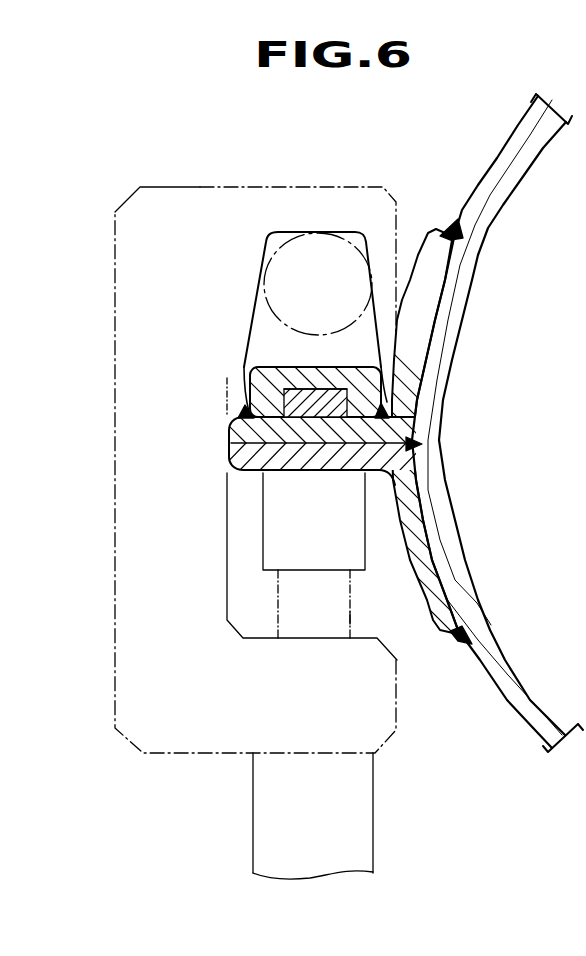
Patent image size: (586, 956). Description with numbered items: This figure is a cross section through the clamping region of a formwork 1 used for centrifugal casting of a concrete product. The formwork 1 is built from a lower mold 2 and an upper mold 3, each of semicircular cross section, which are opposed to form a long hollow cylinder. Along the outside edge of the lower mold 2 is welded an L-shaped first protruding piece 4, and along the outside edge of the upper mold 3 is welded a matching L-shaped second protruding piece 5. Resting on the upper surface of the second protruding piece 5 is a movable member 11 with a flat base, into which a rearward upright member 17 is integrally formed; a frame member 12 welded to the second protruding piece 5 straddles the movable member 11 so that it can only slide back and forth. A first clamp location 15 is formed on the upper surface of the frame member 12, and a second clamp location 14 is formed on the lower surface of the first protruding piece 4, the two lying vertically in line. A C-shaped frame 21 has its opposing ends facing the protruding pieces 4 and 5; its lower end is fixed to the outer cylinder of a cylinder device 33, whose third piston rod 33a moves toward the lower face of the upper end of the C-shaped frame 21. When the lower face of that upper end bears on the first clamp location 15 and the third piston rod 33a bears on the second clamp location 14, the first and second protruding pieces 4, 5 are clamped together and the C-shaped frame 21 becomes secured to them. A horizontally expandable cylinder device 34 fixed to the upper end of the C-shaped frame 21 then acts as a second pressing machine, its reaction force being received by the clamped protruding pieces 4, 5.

The formwork 1 is at (525, 190).
The lower mold 2 is at (448, 548).
The upper mold 3 is at (467, 244).
The first protruding piece 4 is at (225, 473).
The second protruding piece 5 is at (238, 427).
The movable member 11 is at (284, 400).
The frame member 12 is at (246, 381).
The second clamp location 14 is at (315, 475).
The first clamp location 15 is at (308, 366).
The rearward upright member 17 is at (278, 236).
The C-shaped frame 21 is at (115, 257).
The cylinder device 33 is at (367, 833).
The third piston rod 33a is at (350, 618).
The cylinder device 34 is at (335, 233).